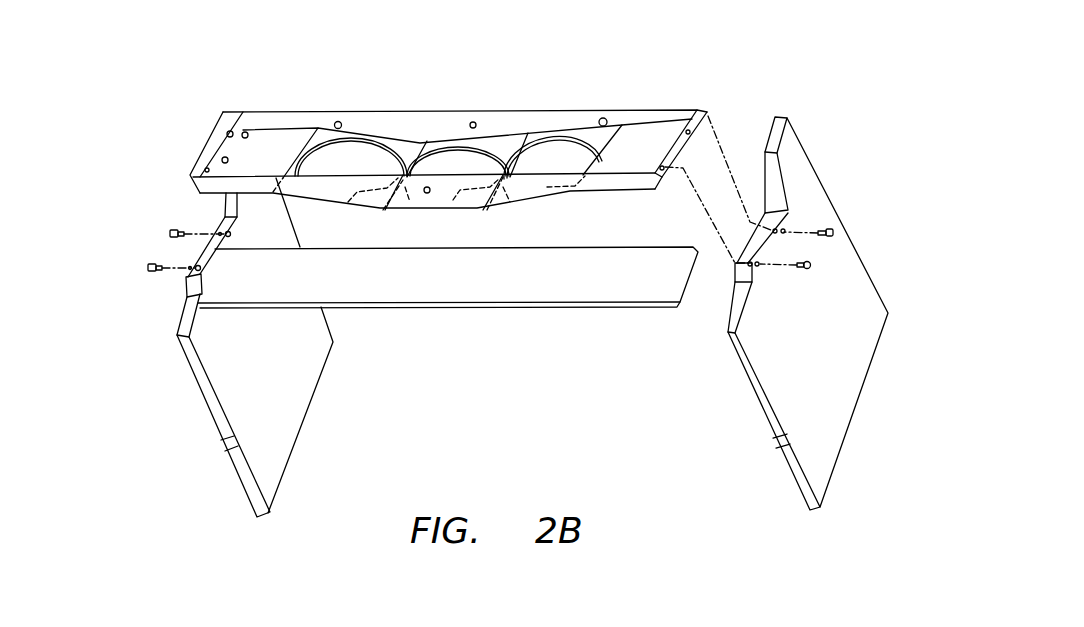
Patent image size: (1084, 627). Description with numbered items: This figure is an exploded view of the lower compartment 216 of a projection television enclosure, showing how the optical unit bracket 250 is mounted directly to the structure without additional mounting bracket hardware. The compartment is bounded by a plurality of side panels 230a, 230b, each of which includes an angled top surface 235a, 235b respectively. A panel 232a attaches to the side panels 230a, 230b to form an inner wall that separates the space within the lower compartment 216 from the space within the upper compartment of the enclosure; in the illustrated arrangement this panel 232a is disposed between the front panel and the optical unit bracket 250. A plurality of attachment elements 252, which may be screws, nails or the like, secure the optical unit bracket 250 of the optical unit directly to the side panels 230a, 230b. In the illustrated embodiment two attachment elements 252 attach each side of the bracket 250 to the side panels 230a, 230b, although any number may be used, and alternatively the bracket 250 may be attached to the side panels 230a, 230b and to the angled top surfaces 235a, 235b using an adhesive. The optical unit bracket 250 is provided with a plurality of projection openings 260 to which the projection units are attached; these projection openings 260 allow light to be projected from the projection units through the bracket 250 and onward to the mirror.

The lower compartment 216 is at (327, 523).
The optical unit bracket 250 is at (438, 124).
The projection openings 260 is at (353, 158).
The side panel 230a is at (213, 418).
The side panel 230b is at (753, 395).
The angled top surface 235a is at (223, 225).
The angled top surface 235b is at (753, 245).
The panel 232a is at (533, 287).
The attachment elements 252 is at (170, 233).